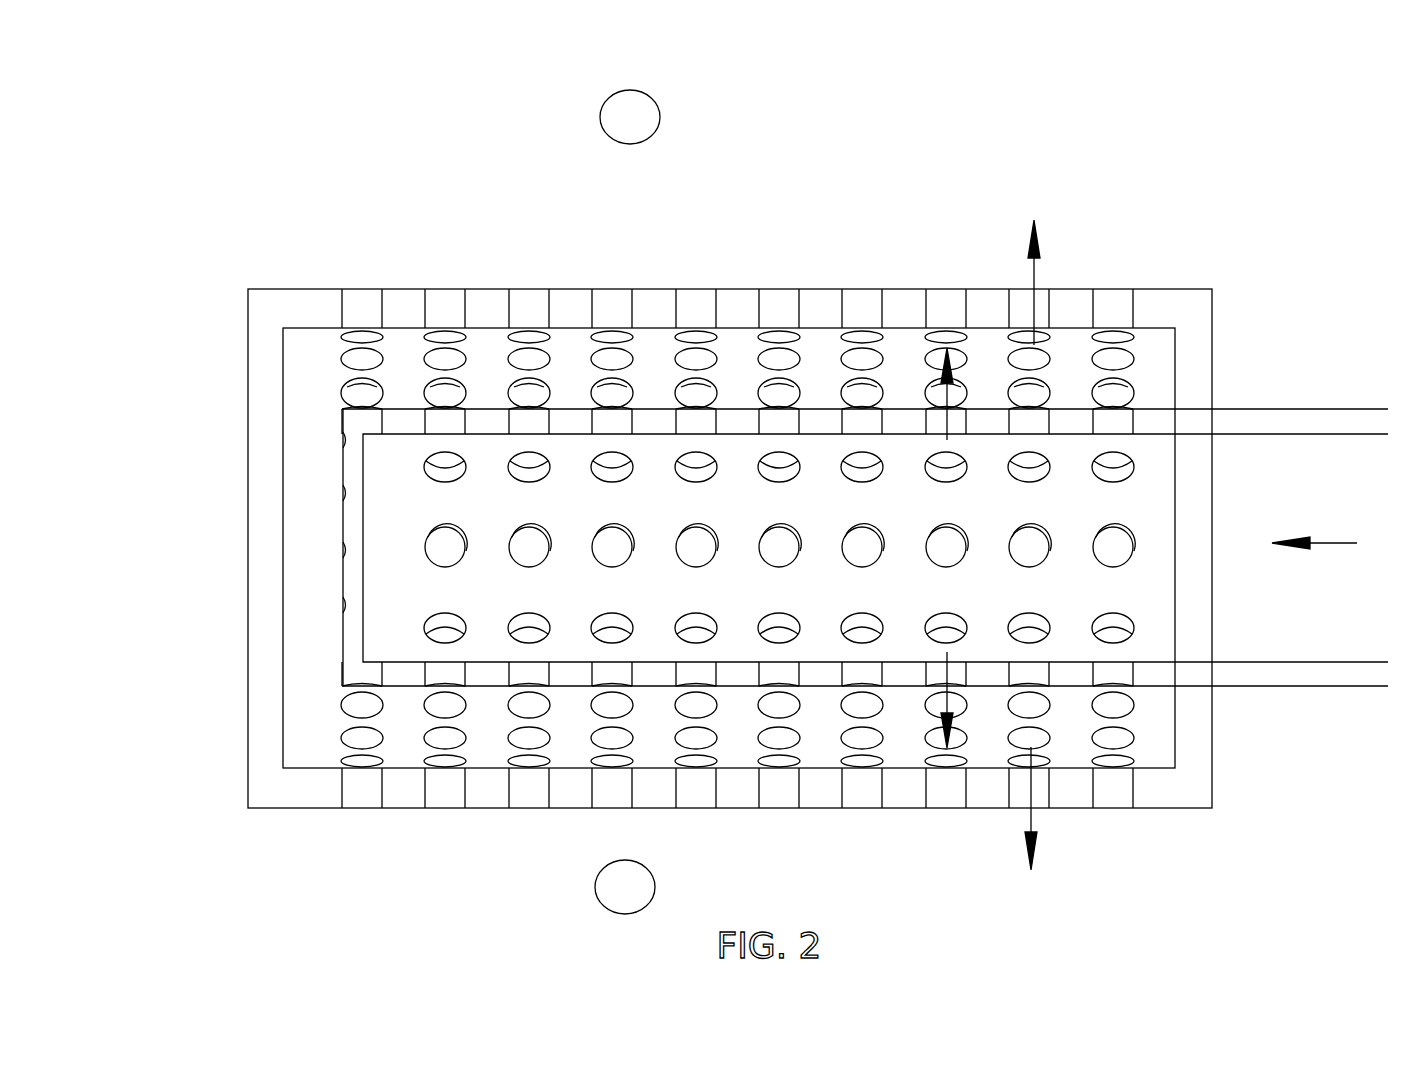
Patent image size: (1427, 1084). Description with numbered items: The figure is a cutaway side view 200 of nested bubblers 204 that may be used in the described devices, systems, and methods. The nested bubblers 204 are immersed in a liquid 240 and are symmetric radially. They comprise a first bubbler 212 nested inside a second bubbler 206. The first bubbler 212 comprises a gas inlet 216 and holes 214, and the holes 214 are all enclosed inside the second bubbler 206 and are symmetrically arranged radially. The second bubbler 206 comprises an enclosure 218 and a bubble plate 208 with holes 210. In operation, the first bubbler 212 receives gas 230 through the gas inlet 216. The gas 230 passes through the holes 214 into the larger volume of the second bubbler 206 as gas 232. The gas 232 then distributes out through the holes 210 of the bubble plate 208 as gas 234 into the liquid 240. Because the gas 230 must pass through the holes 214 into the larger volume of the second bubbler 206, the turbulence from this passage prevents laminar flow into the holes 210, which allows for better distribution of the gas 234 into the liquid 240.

The cutaway side view 200 is at (215, 105).
The nested bubblers 204 is at (313, 290).
The second bubbler 206 is at (313, 618).
The bubble plate 208 is at (663, 305).
The holes 210 is at (868, 302).
The first bubbler 212 is at (350, 535).
The holes 214 is at (1115, 632).
The gas inlet 216 is at (1298, 427).
The enclosure 218 is at (265, 450).
The gas 230 is at (1343, 543).
The gas 232 is at (947, 410).
The gas 234 is at (1029, 549).
The liquid 240 is at (627, 502).